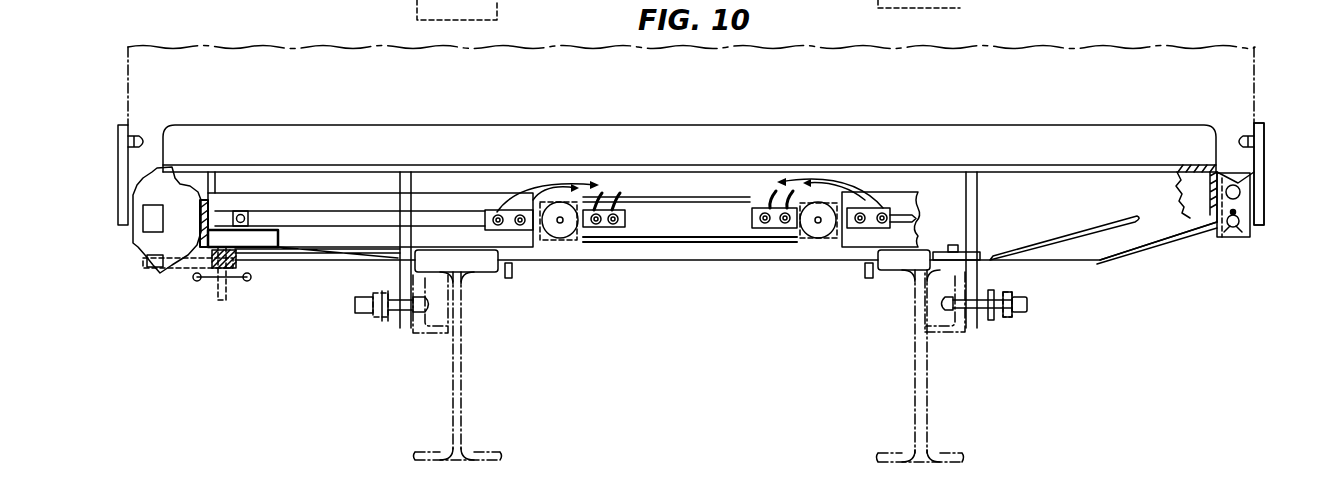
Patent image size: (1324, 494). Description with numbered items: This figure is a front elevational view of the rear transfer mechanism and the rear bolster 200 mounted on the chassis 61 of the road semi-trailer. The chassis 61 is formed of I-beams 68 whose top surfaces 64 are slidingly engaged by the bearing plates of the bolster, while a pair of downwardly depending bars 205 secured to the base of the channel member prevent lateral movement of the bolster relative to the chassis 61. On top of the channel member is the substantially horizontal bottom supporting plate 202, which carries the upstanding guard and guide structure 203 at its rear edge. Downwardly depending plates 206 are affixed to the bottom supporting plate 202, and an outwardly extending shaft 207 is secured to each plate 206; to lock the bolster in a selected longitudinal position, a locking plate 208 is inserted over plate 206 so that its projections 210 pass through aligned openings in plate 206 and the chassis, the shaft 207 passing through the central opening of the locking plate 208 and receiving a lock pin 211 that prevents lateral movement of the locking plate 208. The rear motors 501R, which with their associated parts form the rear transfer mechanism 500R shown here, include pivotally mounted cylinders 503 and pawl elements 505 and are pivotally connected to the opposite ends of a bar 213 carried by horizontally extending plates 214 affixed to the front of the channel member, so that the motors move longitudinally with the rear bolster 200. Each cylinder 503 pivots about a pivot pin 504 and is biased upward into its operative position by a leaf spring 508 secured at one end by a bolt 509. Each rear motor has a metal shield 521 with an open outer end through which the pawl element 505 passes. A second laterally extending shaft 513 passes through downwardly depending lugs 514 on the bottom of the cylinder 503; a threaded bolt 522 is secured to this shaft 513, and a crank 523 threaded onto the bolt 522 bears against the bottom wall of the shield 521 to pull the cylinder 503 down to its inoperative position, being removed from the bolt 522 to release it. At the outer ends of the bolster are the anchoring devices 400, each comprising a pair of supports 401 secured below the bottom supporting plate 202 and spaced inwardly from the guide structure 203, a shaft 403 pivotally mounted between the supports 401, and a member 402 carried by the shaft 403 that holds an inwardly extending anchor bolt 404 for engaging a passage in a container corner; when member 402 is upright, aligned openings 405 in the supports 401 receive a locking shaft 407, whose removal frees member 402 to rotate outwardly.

The top surfaces 64 is at (415, 3).
The rear bolster 200 is at (590, 115).
The guard and guide structure 203 is at (1092, 130).
The bottom supporting plate 202 is at (1052, 166).
The downwardly depending plates 206 is at (404, 275).
The locking plate 208 is at (395, 325).
The rear motors 501R is at (325, 244).
The pivot pin 504 is at (818, 226).
The horizontally extending plates 214 is at (668, 200).
The bar 213 is at (700, 232).
The cylinder 503 is at (900, 200).
The I-beams 68 is at (462, 352).
The chassis 61 is at (936, 413).
The projections 210 is at (432, 305).
The outwardly extending shaft 207 is at (366, 318).
The lock pin 211 is at (1008, 318).
The downwardly depending bars 205 is at (511, 279).
The bolt 509 is at (944, 246).
The leaf spring 508 is at (1105, 222).
The anchoring devices 400 is at (112, 138).
The member 402 is at (1264, 125).
The anchor bolt 404 is at (1237, 141).
The supports 401 is at (1250, 238).
The aligned openings 405 is at (1240, 188).
The locking shaft 407 is at (1256, 166).
The shaft 403 is at (1217, 224).
The right gripper 500R is at (125, 241).
The pawl elements 505 is at (146, 259).
The shield 521 is at (176, 278).
The threaded bolt 522 is at (221, 302).
The downwardly depending lugs 514 is at (238, 258).
The second laterally extending shaft 513 is at (204, 281).
The crank 523 is at (250, 281).